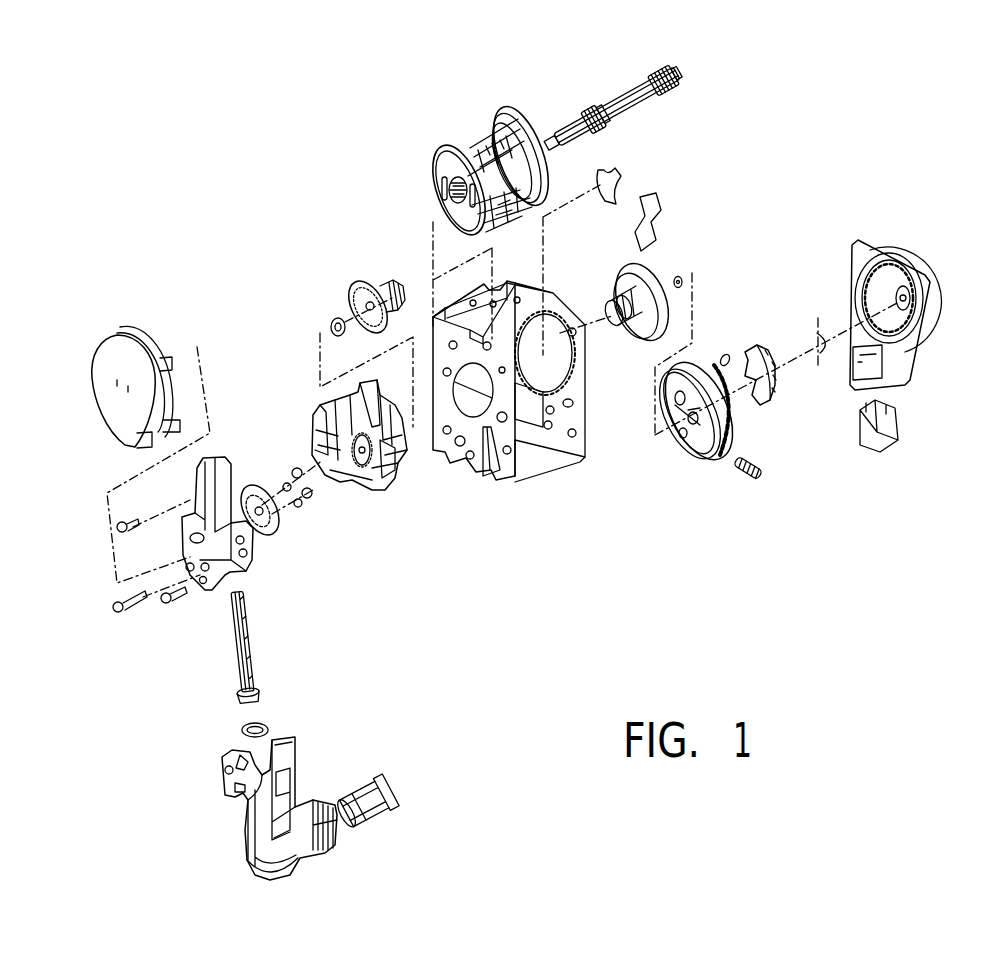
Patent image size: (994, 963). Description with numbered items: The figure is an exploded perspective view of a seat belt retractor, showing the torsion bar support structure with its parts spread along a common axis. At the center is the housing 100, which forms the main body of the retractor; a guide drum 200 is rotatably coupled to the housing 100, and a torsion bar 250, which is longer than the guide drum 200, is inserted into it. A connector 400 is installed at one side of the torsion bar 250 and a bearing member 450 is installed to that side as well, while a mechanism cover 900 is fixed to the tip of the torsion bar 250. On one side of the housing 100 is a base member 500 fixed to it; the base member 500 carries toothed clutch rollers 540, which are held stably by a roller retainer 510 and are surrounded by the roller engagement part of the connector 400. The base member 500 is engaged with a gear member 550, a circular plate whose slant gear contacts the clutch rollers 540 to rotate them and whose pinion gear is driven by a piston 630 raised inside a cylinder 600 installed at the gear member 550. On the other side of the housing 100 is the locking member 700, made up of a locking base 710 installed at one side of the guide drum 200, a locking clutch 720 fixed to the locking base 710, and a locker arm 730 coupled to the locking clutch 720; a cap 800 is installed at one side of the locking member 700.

The housing 100 is at (515, 490).
The guide drum 200 is at (473, 140).
The torsion bar 250 is at (622, 88).
The connector 400 is at (353, 278).
The bearing member 450 is at (330, 320).
The base member 500 is at (392, 500).
The roller retainer 510 is at (363, 466).
The clutch rollers 540 is at (283, 465).
The gear member 550 is at (280, 537).
The cylinder 600 is at (215, 762).
The piston 630 is at (250, 640).
The locking member 700 is at (840, 520).
The locking base 710 is at (640, 348).
The locking clutch 720 is at (712, 460).
The locker arm 730 is at (775, 410).
The cap 800 is at (686, 272).
The mechanism cover 900 is at (910, 244).